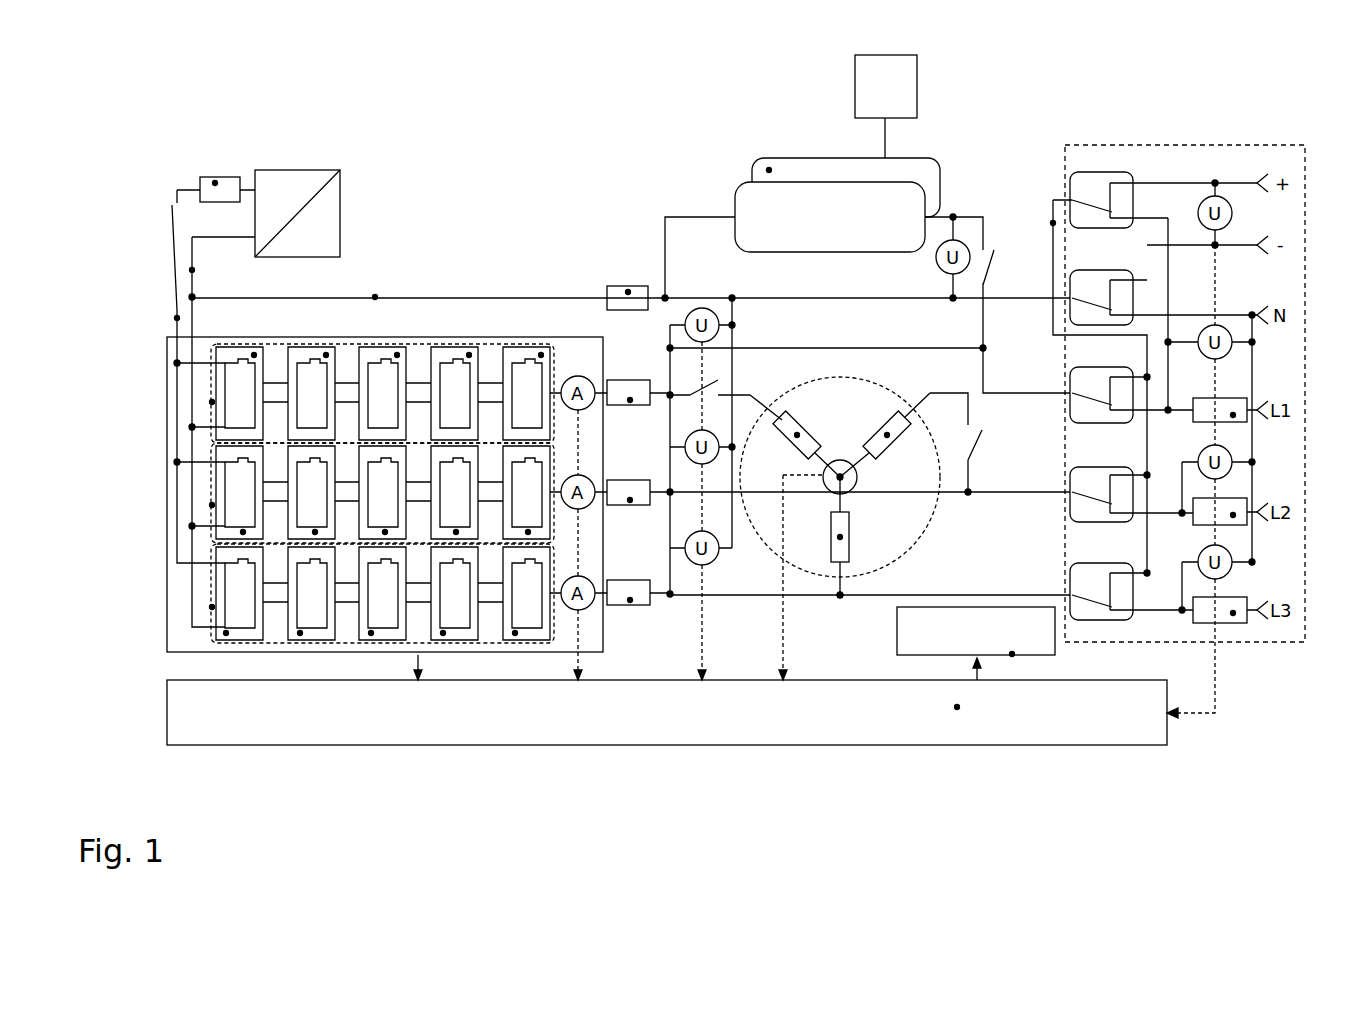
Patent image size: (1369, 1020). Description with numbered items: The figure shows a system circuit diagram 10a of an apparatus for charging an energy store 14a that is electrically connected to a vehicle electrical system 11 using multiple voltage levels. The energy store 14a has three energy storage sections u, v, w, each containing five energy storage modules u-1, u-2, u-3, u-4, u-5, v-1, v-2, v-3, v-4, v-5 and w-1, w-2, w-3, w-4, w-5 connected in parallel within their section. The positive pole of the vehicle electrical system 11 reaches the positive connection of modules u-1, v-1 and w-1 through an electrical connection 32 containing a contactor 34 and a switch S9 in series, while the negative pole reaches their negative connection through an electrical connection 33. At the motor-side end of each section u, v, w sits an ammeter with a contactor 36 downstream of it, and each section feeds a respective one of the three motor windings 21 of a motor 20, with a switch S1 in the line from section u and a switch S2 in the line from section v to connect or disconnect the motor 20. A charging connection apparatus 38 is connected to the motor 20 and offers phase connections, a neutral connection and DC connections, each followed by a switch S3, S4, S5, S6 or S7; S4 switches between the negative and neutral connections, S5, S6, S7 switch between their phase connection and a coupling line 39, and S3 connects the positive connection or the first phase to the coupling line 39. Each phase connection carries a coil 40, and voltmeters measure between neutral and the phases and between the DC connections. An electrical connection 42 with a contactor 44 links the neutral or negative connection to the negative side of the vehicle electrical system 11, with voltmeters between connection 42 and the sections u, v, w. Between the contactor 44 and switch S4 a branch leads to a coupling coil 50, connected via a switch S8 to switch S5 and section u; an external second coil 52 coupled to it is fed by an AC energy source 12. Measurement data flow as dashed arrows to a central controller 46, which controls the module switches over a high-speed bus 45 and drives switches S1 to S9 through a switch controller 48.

The system circuit diagram 10a is at (1006, 146).
The vehicle electrical system 11 is at (364, 182).
The energy source 12 is at (852, 90).
The energy store 14a is at (172, 660).
The motor 20 is at (869, 454).
The motor windings 21 is at (840, 537).
The electrical connection 32 is at (177, 318).
The electrical connection 33 is at (192, 270).
The contactor 34 is at (215, 183).
The contactor 36 is at (630, 600).
The charging connection apparatus 38 is at (1250, 670).
The coupling line 39 is at (1053, 223).
The coil 40 is at (1233, 613).
The electrical connection 42 is at (375, 297).
The contactor 44 is at (628, 292).
The high-speed bus 45 is at (275, 644).
The central controller 46 is at (957, 707).
The switch controller 48 is at (1012, 654).
The coupling coil 50 is at (830, 217).
The external second coil 52 is at (769, 170).
The switch S1 is at (710, 380).
The switch S2 is at (968, 442).
The switch S3 is at (1163, 189).
The switch S4 is at (1108, 287).
The switch S5 is at (1131, 384).
The switch S6 is at (1131, 484).
The switch S7 is at (1131, 580).
The switch S8 is at (1026, 321).
The switch S9 is at (158, 250).
The energy storage section u is at (212, 402).
The energy storage section v is at (212, 505).
The energy storage section w is at (212, 607).
The energy storage module u-1 is at (254, 355).
The energy storage module u-2 is at (326, 355).
The energy storage module u-3 is at (397, 355).
The energy storage module u-4 is at (469, 355).
The energy storage module u-5 is at (541, 355).
The energy storage module v-1 is at (243, 532).
The energy storage module v-2 is at (315, 532).
The energy storage module v-3 is at (385, 532).
The energy storage module v-4 is at (456, 532).
The energy storage module v-5 is at (528, 532).
The energy storage module w-1 is at (226, 633).
The energy storage module w-2 is at (300, 633).
The energy storage module w-3 is at (371, 633).
The energy storage module w-4 is at (443, 633).
The energy storage module w-5 is at (515, 633).